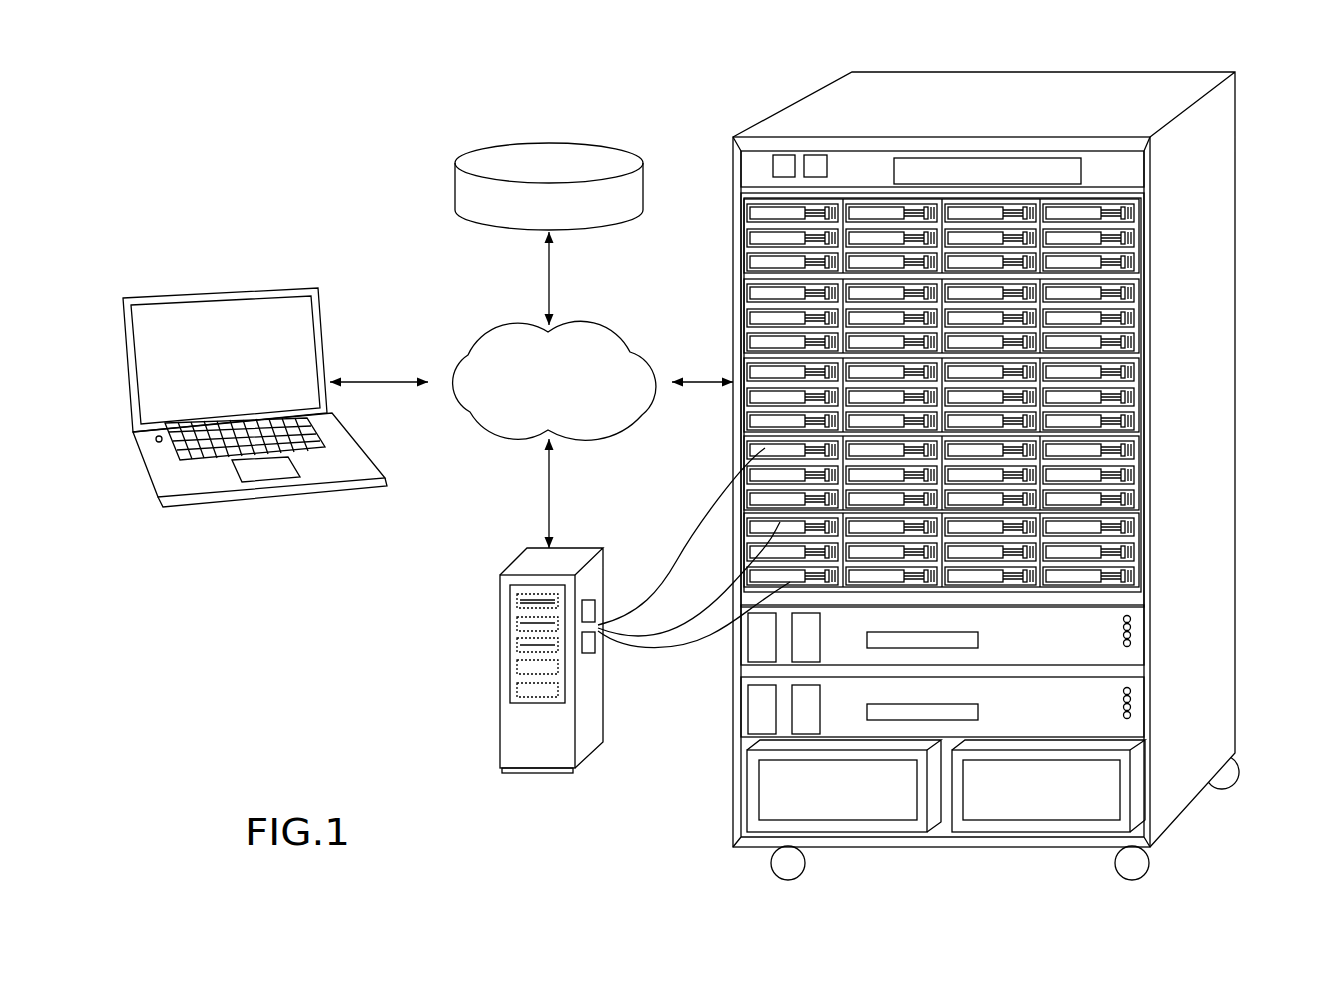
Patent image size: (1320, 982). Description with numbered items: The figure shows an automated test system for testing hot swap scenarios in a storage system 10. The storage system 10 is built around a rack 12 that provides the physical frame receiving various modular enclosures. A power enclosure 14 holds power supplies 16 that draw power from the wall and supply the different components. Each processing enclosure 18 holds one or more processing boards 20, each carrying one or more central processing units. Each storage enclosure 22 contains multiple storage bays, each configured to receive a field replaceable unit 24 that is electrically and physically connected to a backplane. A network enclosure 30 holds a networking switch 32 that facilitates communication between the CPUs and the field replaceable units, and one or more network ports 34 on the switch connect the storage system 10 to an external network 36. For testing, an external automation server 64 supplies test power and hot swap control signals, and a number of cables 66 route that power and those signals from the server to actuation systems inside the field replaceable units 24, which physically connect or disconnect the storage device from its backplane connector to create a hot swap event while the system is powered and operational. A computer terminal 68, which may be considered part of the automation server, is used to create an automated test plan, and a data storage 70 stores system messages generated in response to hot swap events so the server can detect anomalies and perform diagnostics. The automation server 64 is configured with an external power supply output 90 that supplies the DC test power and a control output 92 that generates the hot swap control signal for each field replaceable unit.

The storage system 10 is at (974, 124).
The rack 12 is at (1237, 74).
The power enclosure 14 is at (1133, 790).
The power supply 16 is at (827, 800).
The processing enclosure 18 is at (1148, 715).
The processing board 20 is at (790, 637).
The storage enclosure 22 is at (1145, 512).
The field replaceable unit 24 is at (1133, 528).
The network enclosure 30 is at (1145, 168).
The networking switch 32 is at (1085, 172).
The network port 34 is at (772, 165).
The external network 36 is at (539, 416).
The external automation server 64 is at (500, 688).
The cables 66 is at (697, 623).
The computer terminal 68 is at (280, 287).
The data storage 70 is at (645, 183).
The external power supply output 90 is at (597, 601).
The control output 92 is at (597, 655).